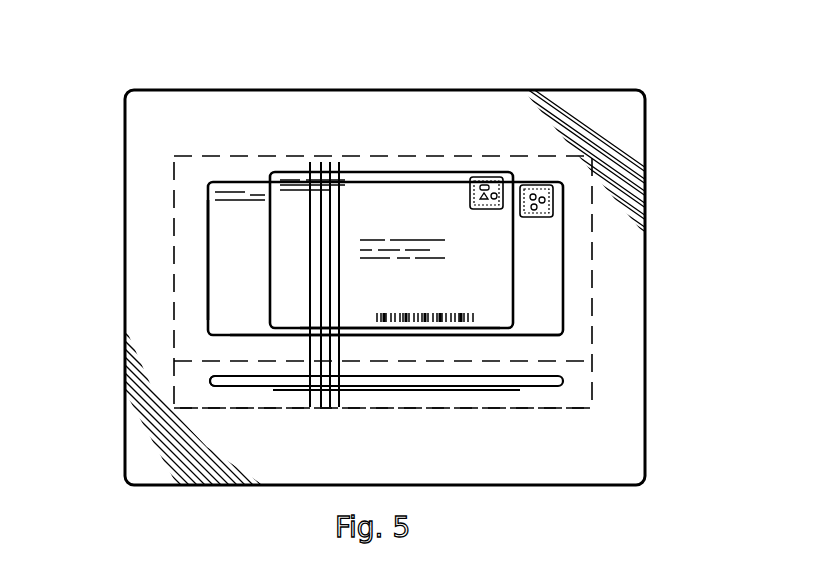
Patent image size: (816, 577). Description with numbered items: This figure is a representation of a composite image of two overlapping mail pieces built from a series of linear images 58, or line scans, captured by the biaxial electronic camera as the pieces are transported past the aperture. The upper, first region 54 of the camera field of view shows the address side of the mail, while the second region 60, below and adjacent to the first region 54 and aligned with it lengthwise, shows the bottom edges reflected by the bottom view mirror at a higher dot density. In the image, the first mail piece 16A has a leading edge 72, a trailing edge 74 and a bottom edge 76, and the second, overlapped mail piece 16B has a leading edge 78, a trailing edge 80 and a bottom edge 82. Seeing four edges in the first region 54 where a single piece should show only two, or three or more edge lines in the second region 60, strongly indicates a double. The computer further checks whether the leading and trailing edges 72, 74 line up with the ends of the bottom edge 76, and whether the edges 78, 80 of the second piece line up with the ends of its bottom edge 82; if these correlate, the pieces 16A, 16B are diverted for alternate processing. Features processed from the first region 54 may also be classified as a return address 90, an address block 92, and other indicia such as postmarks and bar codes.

The first mail piece 16A is at (447, 185).
The second mail piece 16B is at (253, 197).
The first region 54 is at (583, 248).
The linear images 58 is at (326, 163).
The second region 60 is at (587, 377).
The leading edge 72 is at (263, 180).
The trailing edge 74 is at (522, 182).
The bottom edge 76 is at (500, 328).
The leading edge 78 is at (207, 232).
The trailing edge 80 is at (600, 170).
The bottom edge 82 is at (228, 338).
The return address 90 is at (217, 187).
The address block 92 is at (400, 240).